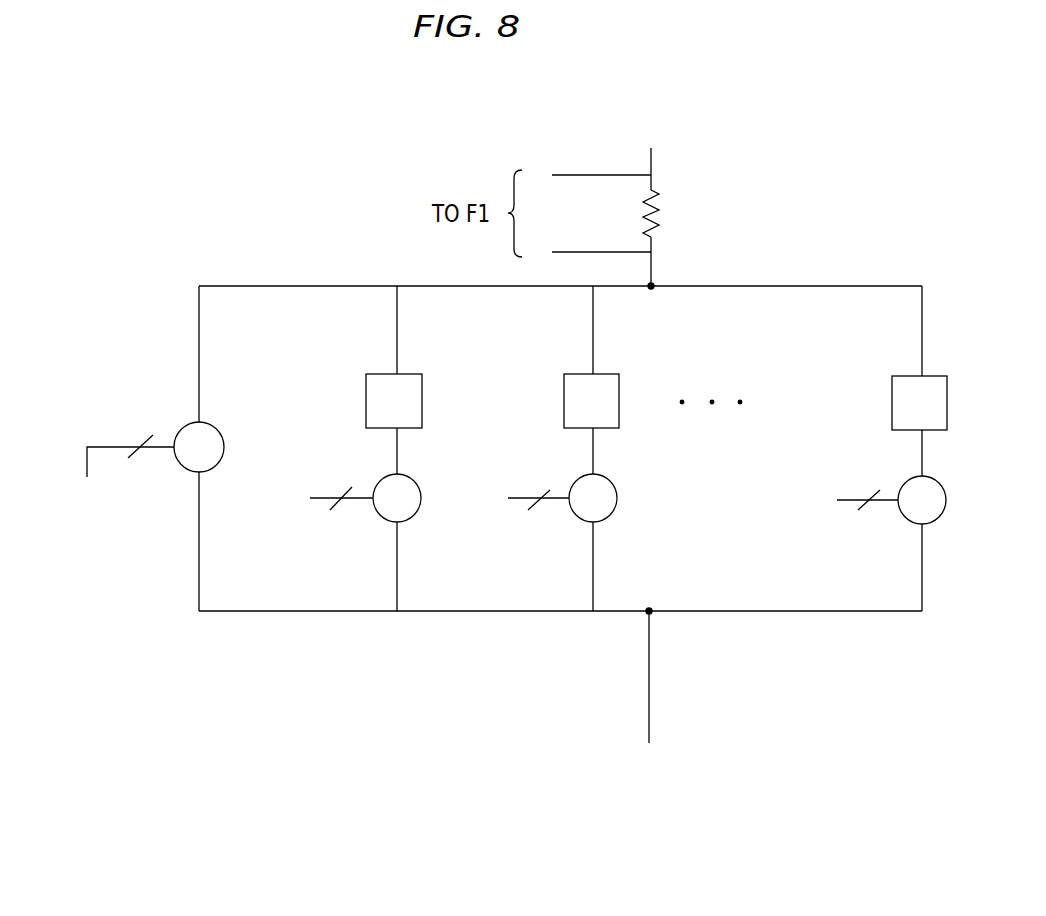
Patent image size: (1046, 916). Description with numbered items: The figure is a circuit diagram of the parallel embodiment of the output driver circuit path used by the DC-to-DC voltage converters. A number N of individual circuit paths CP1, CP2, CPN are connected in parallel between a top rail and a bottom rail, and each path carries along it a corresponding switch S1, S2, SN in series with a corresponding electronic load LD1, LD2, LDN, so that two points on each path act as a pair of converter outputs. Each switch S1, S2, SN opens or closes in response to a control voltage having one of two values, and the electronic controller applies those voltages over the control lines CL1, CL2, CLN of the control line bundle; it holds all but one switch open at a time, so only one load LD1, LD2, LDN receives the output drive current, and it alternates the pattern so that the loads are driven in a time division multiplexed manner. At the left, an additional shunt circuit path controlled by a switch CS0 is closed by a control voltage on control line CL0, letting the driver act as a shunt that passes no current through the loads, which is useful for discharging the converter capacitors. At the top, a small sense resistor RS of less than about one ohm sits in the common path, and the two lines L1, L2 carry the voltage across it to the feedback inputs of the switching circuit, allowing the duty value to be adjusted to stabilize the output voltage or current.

The feedback line L1 is at (588, 175).
The feedback line L2 is at (566, 252).
The sense resistor RS is at (675, 230).
The main current sensor CS0 is at (188, 469).
The control line CL0 is at (122, 476).
The circuit path CP1 is at (328, 392).
The circuit path CP2 is at (526, 395).
The circuit path CPN is at (851, 393).
The electronic load LD1 is at (394, 401).
The electronic load LD2 is at (591, 401).
The electronic load LDN is at (919, 403).
The switch S1 is at (382, 520).
The switch S2 is at (578, 520).
The switch SN is at (905, 525).
The control line CL1 is at (322, 498).
The control line CL2 is at (516, 499).
The control line CLN is at (843, 502).